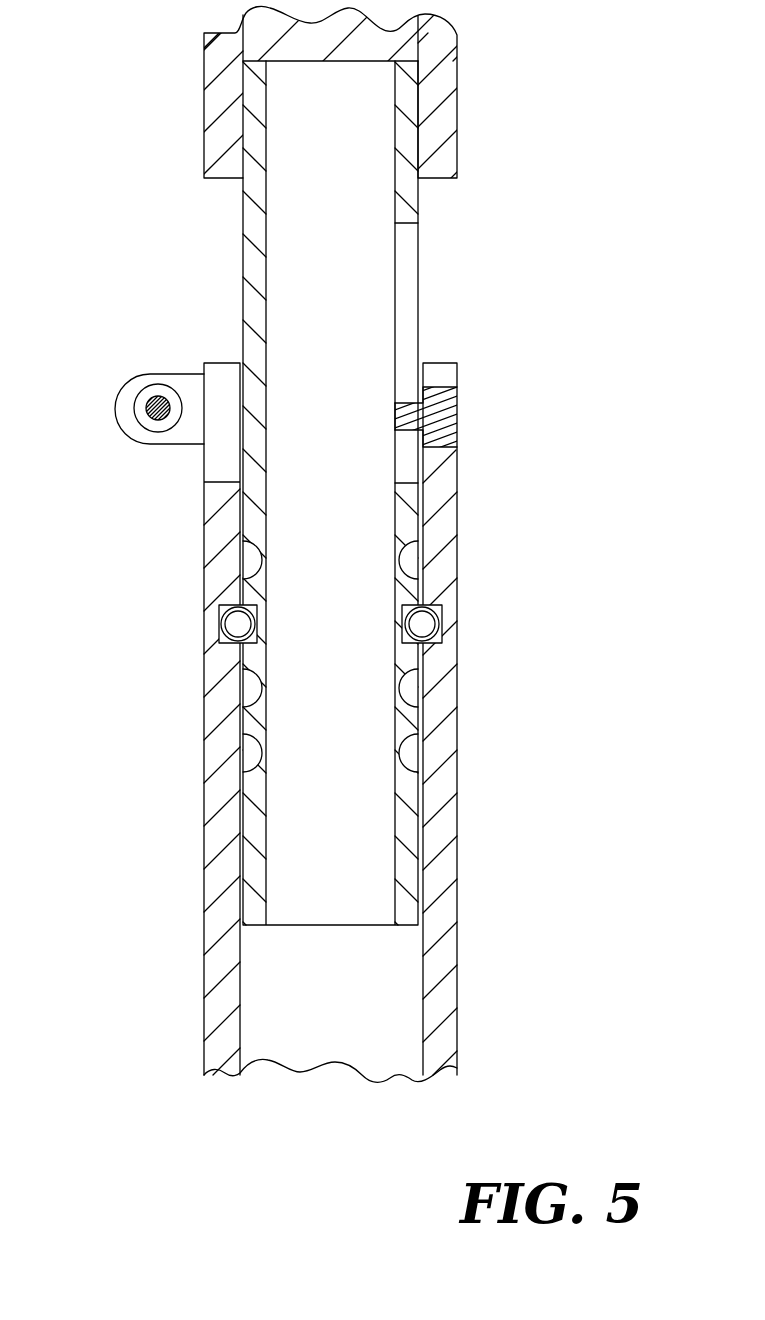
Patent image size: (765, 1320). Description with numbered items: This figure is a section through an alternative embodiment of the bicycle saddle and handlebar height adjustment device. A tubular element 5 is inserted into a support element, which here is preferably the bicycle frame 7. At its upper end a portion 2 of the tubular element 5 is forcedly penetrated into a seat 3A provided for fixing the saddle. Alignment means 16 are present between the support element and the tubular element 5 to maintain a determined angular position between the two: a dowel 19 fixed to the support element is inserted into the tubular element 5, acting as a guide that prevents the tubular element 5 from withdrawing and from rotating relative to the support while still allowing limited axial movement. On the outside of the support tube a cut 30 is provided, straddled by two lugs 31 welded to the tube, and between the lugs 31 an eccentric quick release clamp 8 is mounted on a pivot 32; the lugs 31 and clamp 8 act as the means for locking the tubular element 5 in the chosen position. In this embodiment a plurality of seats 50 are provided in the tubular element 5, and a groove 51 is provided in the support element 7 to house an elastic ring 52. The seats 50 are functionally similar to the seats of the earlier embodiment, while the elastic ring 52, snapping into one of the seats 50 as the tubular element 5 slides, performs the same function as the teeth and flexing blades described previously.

The portion of the tubular element 2 is at (433, 157).
The seat 3A is at (292, 493).
The tubular element 5 is at (433, 309).
The frame 7 is at (445, 532).
The eccentric quick release clamp 8 is at (126, 424).
The alignment means 16 is at (366, 422).
The dowel 19 is at (438, 422).
The cut 30 is at (214, 470).
The lugs 31 is at (120, 412).
The pivot pin 32 is at (155, 400).
The seats 50 is at (262, 558).
The groove 51 is at (233, 648).
The elastic ring 52 is at (238, 623).